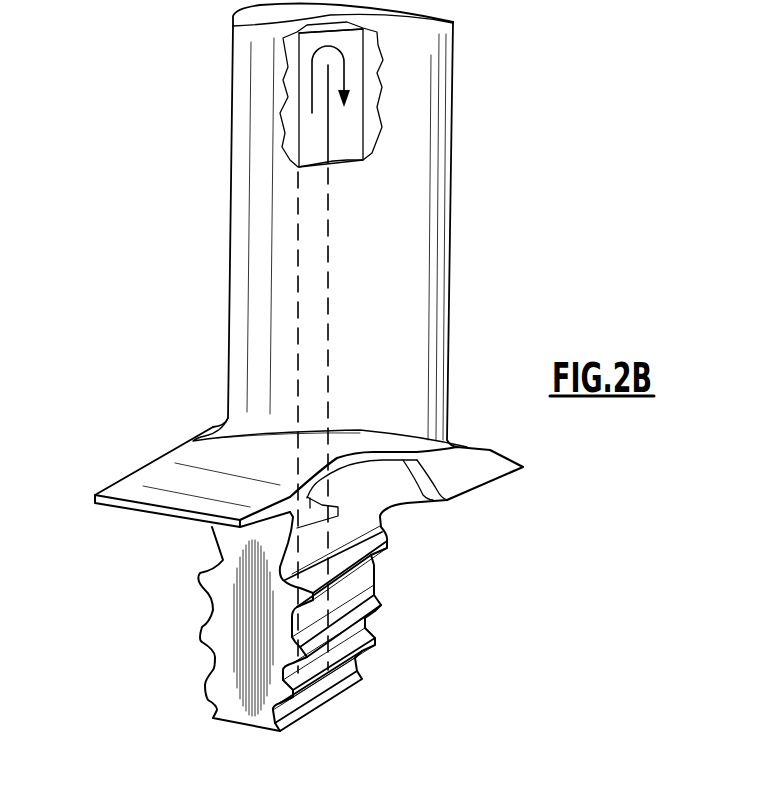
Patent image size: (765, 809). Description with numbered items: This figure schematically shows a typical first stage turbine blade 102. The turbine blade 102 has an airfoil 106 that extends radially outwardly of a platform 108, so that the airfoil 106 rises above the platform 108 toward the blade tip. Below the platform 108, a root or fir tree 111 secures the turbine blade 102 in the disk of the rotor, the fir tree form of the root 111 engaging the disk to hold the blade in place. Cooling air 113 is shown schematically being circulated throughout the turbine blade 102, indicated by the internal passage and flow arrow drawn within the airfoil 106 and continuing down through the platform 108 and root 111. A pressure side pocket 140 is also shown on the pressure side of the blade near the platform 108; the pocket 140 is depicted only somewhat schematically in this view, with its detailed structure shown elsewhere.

The first stage turbine blade 102 is at (118, 325).
The airfoil 106 is at (400, 270).
The platform 108 is at (200, 487).
The root or fir tree 111 is at (230, 675).
The cooling air 113 is at (313, 308).
The pressure side pocket 140 is at (380, 493).